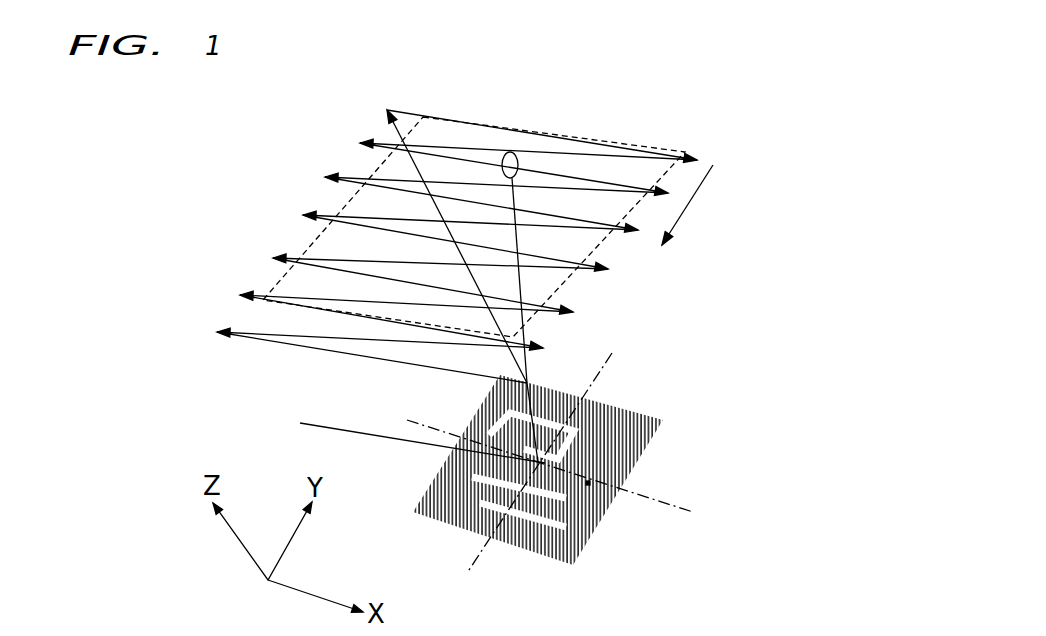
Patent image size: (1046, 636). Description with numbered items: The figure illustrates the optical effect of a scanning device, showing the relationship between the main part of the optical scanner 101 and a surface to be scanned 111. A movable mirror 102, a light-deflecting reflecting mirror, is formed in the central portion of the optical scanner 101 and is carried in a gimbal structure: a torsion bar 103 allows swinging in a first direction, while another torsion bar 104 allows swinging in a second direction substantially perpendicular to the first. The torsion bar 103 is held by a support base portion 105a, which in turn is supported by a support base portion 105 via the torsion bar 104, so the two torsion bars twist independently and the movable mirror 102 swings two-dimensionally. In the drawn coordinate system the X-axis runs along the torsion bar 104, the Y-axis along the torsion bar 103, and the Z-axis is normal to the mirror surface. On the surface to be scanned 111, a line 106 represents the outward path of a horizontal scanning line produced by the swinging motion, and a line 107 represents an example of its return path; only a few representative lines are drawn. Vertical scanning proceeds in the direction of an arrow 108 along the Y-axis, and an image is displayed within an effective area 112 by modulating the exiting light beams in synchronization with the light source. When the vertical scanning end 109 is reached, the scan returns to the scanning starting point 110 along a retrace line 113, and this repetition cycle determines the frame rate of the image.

The optical scanner 101 is at (610, 390).
The movable mirror 102 is at (552, 462).
The torsion bar 103 is at (543, 448).
The torsion bar 104 is at (588, 484).
The support base portion 105 is at (543, 540).
The support base portion 105a is at (488, 468).
The line 106 is at (597, 143).
The line 107 is at (545, 153).
The arrow 108 is at (692, 200).
The scanning end 109 is at (522, 385).
The scanning starting point 110 is at (387, 110).
The surface to be scanned 111 is at (293, 283).
The effective area 112 is at (375, 167).
The retrace line 113 is at (425, 176).